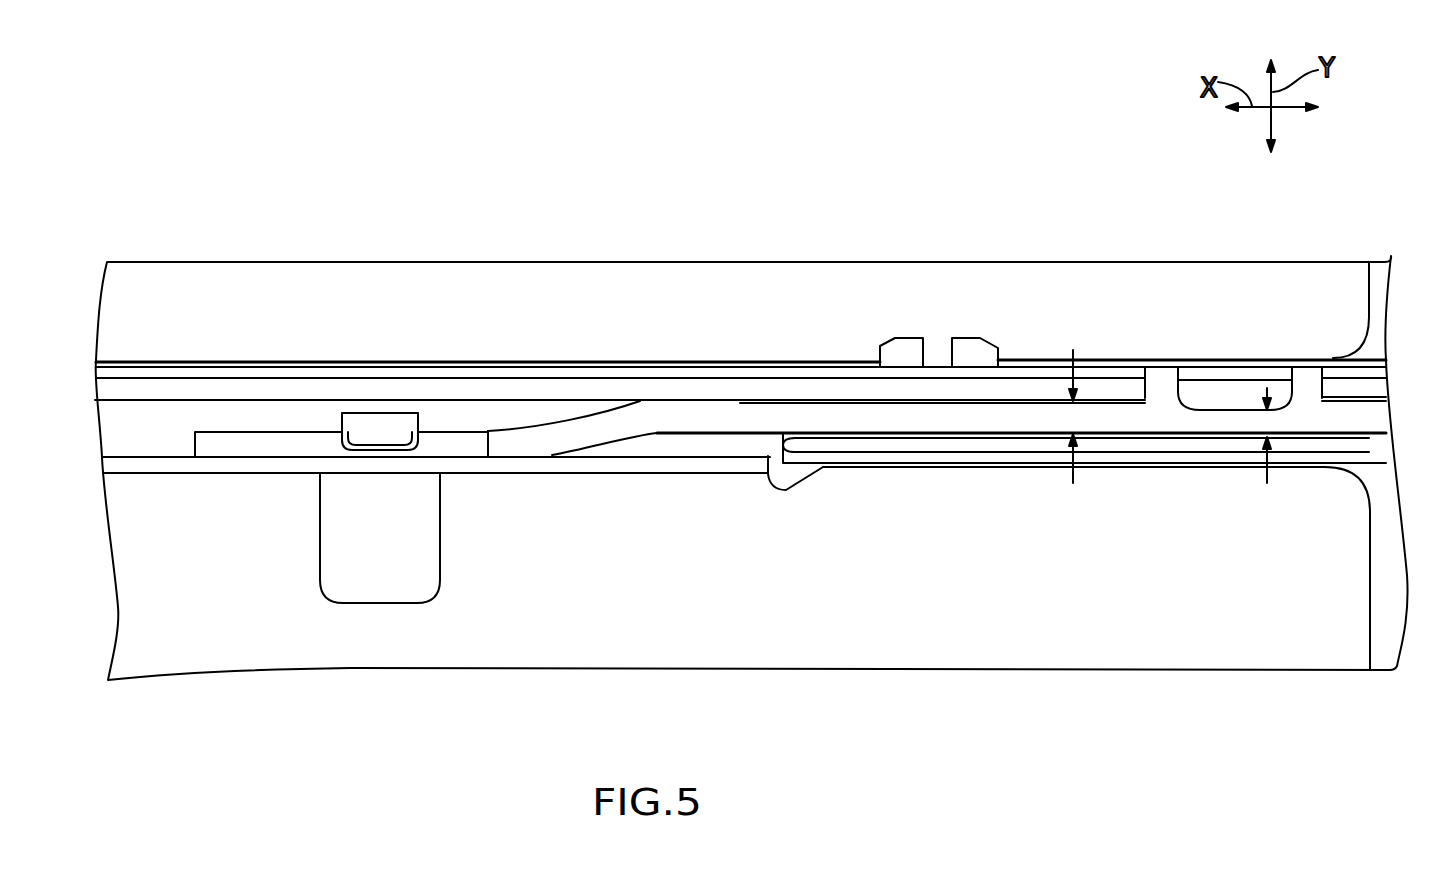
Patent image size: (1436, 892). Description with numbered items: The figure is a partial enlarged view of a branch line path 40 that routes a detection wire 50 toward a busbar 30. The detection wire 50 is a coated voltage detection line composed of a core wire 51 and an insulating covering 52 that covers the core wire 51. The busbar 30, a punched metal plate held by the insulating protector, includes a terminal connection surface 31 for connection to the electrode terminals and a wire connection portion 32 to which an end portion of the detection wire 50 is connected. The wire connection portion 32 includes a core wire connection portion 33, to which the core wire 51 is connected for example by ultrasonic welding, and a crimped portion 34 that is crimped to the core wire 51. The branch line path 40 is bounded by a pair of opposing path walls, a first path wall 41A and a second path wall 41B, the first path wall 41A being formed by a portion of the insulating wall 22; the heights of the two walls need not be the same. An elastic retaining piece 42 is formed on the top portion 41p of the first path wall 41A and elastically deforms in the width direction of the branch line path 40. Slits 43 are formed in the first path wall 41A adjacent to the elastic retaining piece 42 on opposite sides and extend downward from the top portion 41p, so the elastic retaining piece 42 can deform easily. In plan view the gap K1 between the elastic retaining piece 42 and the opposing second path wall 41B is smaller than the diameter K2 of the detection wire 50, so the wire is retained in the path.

The insulating wall 22 is at (322, 392).
The busbar 30 is at (655, 500).
The terminal connection surface 31 is at (580, 505).
The wire connection portion 32 is at (270, 470).
The core wire connection portion 33 is at (158, 457).
The crimped portion 34 is at (378, 422).
The branch line path 40 is at (1006, 390).
The first path wall 41A is at (790, 387).
The second path wall 41B is at (830, 445).
The top portion 41p is at (752, 383).
The elastic retaining piece 42 is at (1223, 397).
The slit 43 is at (1160, 366).
The detection wire 50 is at (407, 214).
The core wire 51 is at (457, 442).
The insulating covering 52 is at (520, 420).
The gap K1 is at (1267, 422).
The diameter of the detection wire K2 is at (1073, 413).